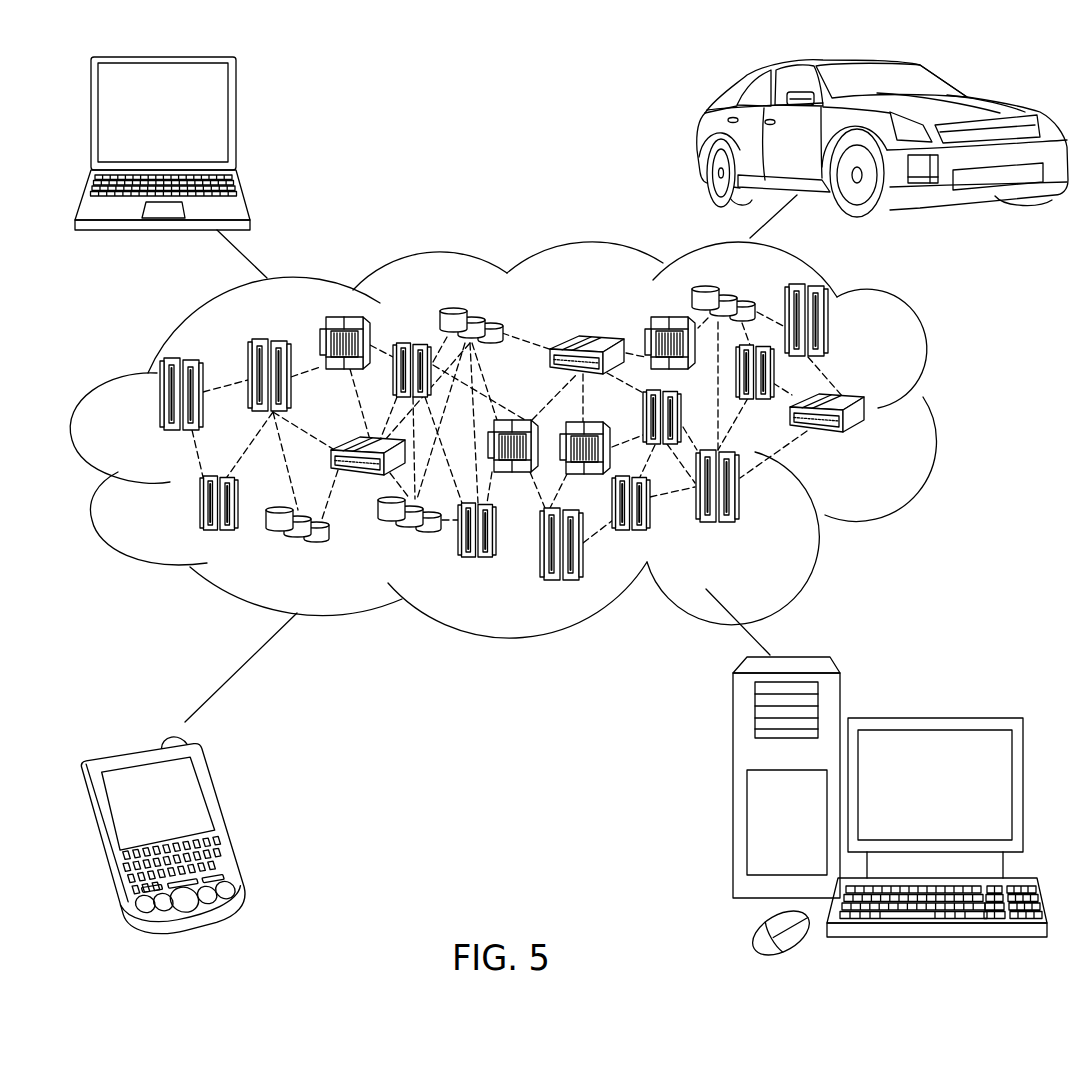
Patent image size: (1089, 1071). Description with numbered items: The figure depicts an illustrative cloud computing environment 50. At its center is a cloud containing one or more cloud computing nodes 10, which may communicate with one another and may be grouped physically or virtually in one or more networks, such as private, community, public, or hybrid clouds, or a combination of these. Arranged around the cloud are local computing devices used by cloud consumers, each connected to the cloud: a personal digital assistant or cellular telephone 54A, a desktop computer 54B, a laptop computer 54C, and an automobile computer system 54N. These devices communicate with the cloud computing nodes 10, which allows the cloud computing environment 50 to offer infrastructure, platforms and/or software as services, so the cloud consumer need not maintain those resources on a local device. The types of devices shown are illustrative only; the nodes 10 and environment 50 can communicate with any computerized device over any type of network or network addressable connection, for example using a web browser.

The cloud computing node 10 is at (880, 446).
The cloud computing environment 50 is at (922, 406).
The personal digital assistant (PDA) or cellular telephone 54A is at (227, 816).
The desktop computer 54B is at (933, 717).
The laptop computer 54C is at (235, 120).
The automobile computer system 54N is at (700, 138).